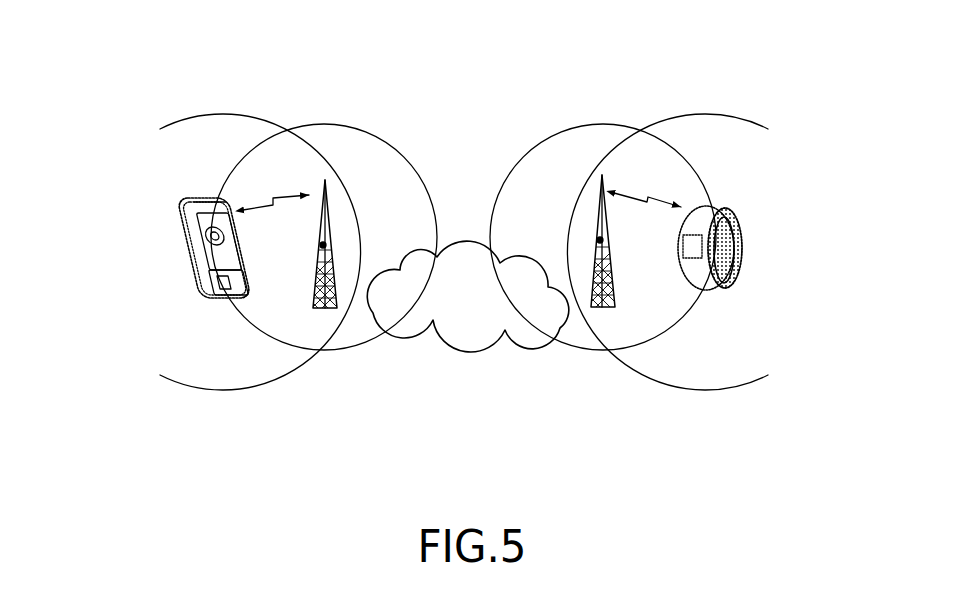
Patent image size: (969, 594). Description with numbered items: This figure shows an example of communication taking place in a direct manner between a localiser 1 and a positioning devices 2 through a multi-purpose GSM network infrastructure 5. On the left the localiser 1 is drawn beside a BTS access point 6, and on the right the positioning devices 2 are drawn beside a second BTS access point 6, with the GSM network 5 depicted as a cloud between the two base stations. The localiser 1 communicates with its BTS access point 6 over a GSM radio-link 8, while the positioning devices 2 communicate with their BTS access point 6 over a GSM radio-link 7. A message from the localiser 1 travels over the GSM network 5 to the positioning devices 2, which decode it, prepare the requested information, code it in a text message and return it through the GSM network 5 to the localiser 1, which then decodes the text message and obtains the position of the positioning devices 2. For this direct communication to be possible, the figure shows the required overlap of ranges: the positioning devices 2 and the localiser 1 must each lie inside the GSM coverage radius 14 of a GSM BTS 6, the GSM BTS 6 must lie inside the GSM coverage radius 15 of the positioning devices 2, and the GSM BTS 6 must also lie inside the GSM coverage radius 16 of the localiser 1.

The localiser 1 is at (217, 300).
The positioning devices 2 is at (725, 288).
The GSM network 5 is at (473, 320).
The BTS access point 6 is at (322, 310).
The GSM radio-link 7 is at (668, 205).
The GSM radio-link 8 is at (266, 205).
The GSM coverage radius 14 is at (463, 186).
The GSM coverage radius 15 is at (717, 110).
The GSM coverage radius 16 is at (222, 113).